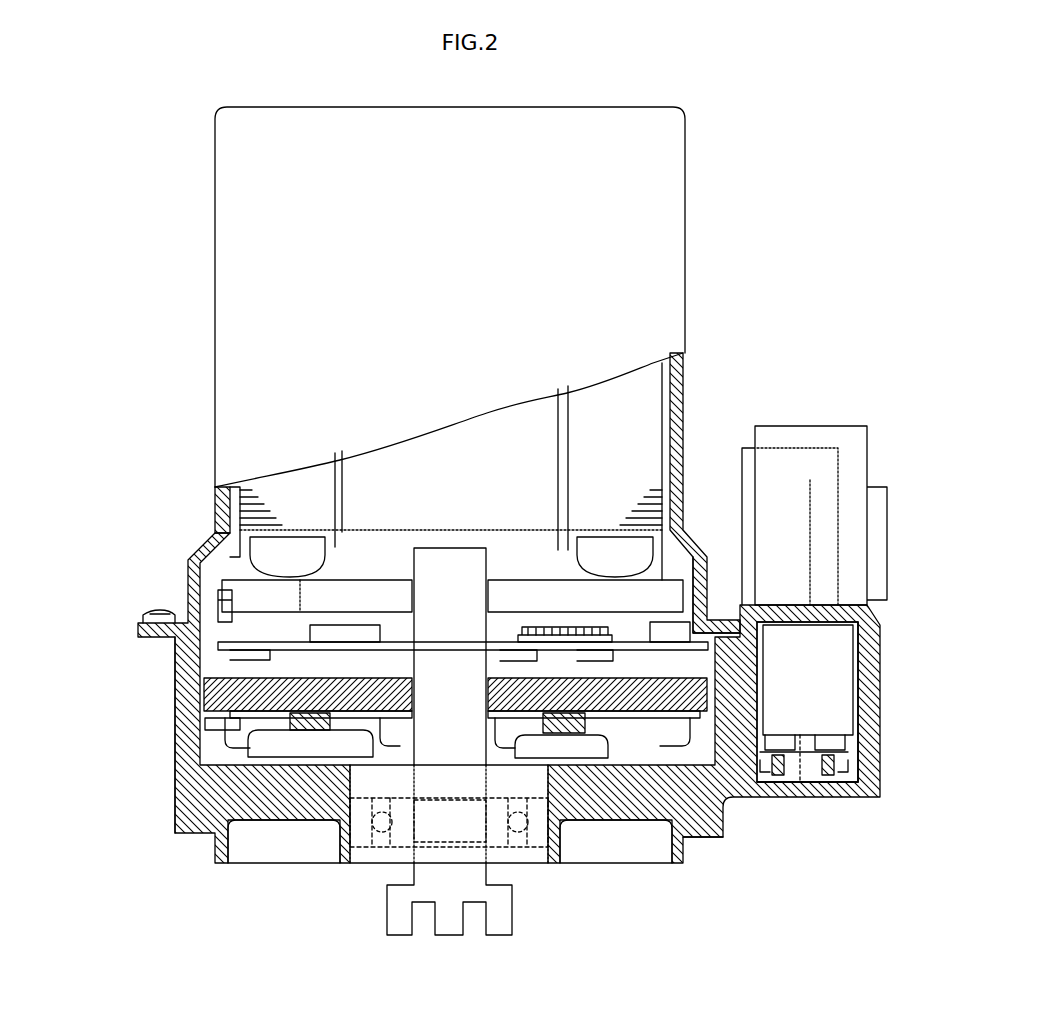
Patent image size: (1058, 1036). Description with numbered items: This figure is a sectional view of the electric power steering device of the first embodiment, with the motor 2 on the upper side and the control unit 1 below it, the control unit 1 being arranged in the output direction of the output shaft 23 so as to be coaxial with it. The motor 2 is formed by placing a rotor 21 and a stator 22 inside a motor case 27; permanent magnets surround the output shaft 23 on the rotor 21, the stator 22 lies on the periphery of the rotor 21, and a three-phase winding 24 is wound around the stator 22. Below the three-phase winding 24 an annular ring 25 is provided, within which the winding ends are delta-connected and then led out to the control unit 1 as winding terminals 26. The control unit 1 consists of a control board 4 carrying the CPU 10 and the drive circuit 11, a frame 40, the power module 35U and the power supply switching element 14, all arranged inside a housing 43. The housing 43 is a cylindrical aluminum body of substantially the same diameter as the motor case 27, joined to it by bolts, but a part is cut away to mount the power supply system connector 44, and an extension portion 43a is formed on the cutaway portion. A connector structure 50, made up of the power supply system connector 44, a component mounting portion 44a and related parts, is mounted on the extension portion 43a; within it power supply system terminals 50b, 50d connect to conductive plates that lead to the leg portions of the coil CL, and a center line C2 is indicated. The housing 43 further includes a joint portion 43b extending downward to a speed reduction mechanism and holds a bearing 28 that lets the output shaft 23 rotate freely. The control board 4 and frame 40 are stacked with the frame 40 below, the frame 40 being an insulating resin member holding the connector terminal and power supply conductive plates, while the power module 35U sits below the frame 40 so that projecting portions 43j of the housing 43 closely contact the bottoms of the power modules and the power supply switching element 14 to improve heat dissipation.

The motor 2 is at (205, 278).
The stator 22 is at (683, 353).
The motor case 27 is at (685, 440).
The annular ring 25 is at (703, 543).
The drive circuit 11 is at (210, 572).
The rotor 21 is at (370, 452).
The three-phase winding 24 is at (262, 563).
The output shaft 23 is at (430, 548).
The housing 43 is at (185, 812).
The control unit 1 is at (175, 772).
The joint portion 43b is at (215, 866).
The projecting portions 43j is at (318, 755).
The extension portion 43a is at (773, 797).
The winding terminals 26 is at (195, 612).
The control board 4 is at (218, 648).
The CPU 10 is at (567, 645).
The frame 40 is at (200, 712).
The power module 35U is at (255, 755).
The power supply switching element 14 is at (562, 755).
The bearing 28 is at (530, 850).
The power supply system connector 44 is at (793, 425).
The power supply system terminal 50b is at (812, 480).
The connector structure 50 is at (870, 608).
The power supply system terminal 50d is at (722, 797).
The component mounting portion 44a is at (777, 780).
The center axis C2 is at (808, 767).
The coil CL is at (855, 800).